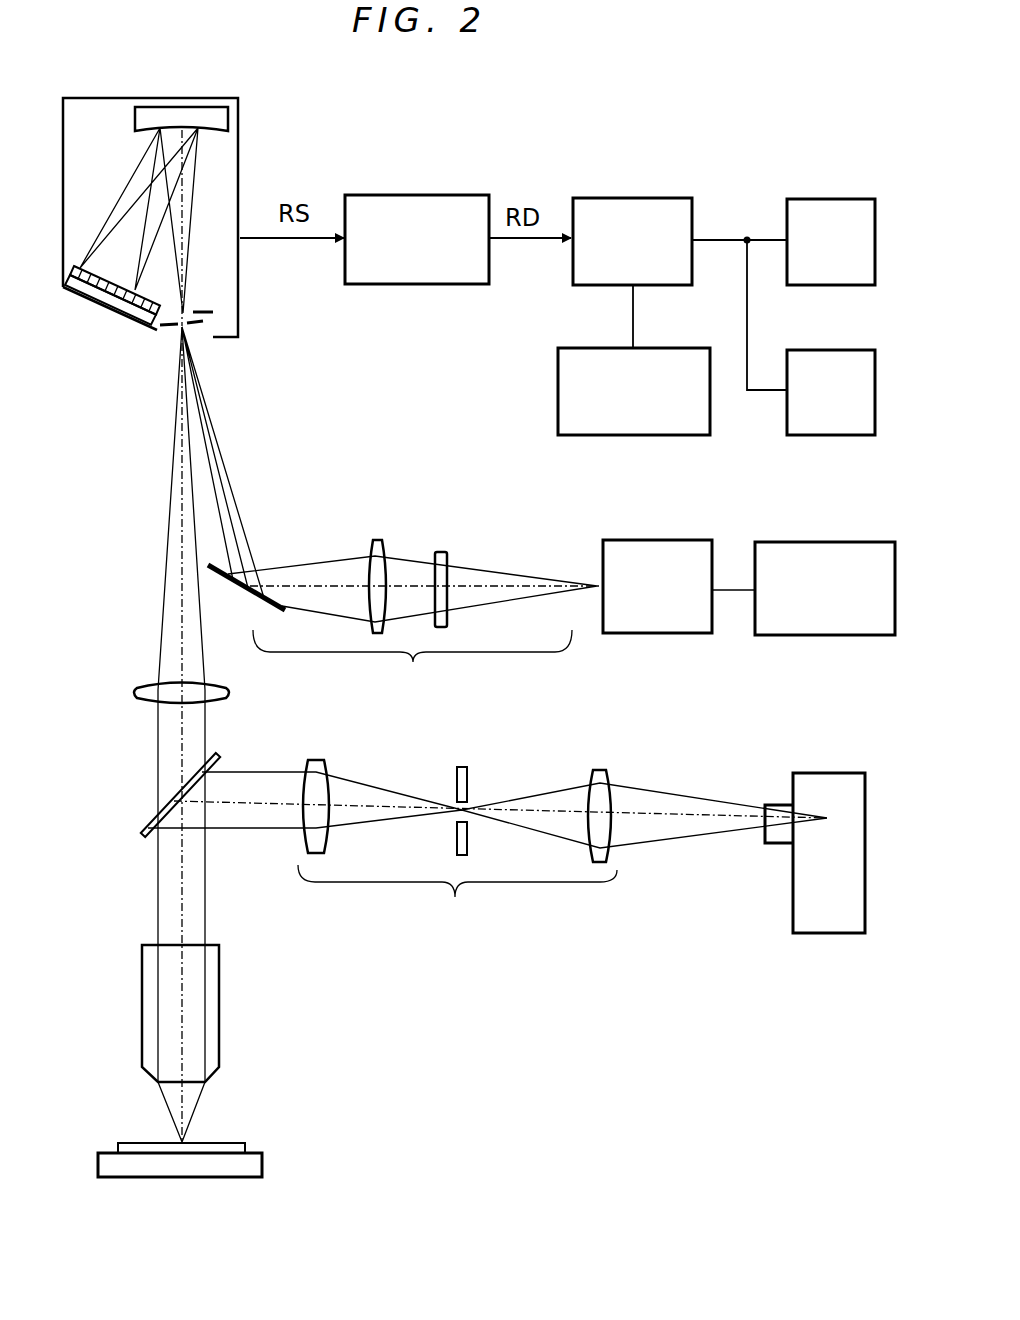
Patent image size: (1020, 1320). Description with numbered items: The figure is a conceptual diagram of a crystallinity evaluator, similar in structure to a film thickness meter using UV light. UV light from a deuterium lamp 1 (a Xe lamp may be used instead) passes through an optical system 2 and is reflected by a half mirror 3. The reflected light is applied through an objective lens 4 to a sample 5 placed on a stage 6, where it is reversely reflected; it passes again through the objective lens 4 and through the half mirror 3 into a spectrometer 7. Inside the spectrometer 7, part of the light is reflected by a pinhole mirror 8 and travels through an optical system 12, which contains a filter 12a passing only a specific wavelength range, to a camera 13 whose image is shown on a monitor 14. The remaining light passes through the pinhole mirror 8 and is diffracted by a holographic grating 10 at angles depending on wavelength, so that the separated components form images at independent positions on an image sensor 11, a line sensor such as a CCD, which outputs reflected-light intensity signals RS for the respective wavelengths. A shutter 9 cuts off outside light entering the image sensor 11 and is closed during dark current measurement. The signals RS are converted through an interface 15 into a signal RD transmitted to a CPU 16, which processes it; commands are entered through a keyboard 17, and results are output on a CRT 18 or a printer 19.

The deuterium lamp 1 is at (800, 892).
The optical system 2 is at (457, 849).
The half mirror 3 is at (215, 758).
The objective lens 4 is at (220, 963).
The sample 5 is at (226, 1143).
The stage 6 is at (258, 1156).
The spectrometer 7 is at (246, 260).
The pinhole mirror 8 is at (173, 330).
The shutter 9 is at (205, 306).
The holographic grating 10 is at (222, 132).
The image sensor 11 is at (105, 302).
The optical system 12 is at (405, 621).
The filter 12a is at (441, 551).
The camera 13 is at (650, 634).
The monitor 14 is at (812, 636).
The interface 15 is at (428, 195).
The CPU 16 is at (597, 197).
The keyboard 17 is at (657, 322).
The CRT 18 is at (802, 198).
The printer 19 is at (797, 349).